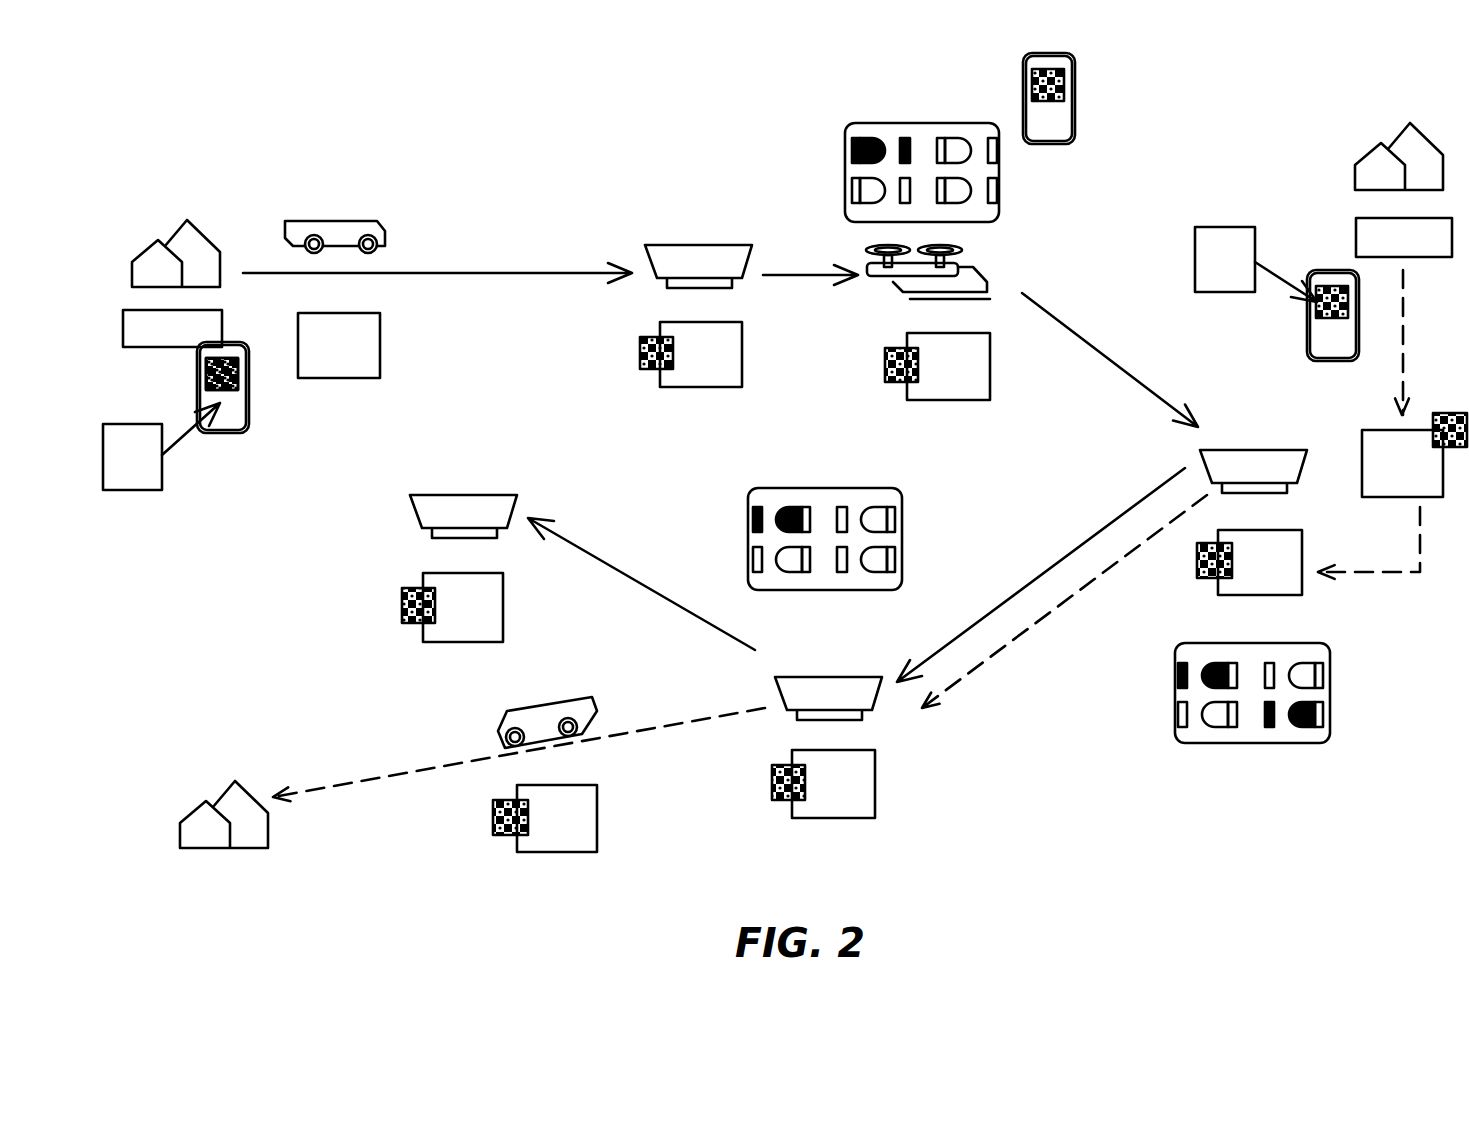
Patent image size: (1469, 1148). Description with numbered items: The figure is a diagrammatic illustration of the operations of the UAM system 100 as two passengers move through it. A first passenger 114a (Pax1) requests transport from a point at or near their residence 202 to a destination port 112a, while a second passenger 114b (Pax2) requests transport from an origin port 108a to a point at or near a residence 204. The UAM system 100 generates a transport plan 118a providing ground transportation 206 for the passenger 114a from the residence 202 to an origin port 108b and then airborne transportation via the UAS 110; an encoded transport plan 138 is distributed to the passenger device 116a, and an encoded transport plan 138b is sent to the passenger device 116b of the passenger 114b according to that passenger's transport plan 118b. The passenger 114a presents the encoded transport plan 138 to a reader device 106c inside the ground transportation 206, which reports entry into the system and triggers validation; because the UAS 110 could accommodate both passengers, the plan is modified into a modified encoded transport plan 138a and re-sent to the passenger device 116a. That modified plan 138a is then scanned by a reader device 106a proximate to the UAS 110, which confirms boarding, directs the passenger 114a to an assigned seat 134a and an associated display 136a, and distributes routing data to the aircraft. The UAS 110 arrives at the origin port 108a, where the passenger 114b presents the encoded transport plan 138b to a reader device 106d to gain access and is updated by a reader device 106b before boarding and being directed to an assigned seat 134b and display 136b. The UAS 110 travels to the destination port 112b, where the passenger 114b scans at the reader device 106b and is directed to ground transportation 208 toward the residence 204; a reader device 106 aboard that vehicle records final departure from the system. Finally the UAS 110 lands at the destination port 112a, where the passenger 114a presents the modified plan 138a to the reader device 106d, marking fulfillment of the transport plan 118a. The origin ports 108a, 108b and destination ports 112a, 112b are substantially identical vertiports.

The UAM system 100 is at (229, 86).
The residence 202 is at (186, 221).
The residence 204 is at (230, 783).
The ground transportation 206 is at (336, 221).
The ground transportation 208 is at (495, 730).
The origin port 108a is at (1252, 450).
The origin port 108b is at (697, 243).
The destination port 112a is at (415, 513).
The destination port 112b is at (883, 693).
The uncrewed aircraft system 110 is at (1023, 262).
The reader device 106 is at (722, 367).
The reader device 106a is at (970, 382).
The reader device 106b is at (855, 801).
The reader device 106c is at (361, 355).
The reader device 106d is at (485, 622).
The passenger 114a is at (217, 342).
The passenger 114b is at (1448, 254).
The passenger device 116a is at (250, 388).
The passenger device 116b is at (1305, 315).
The transport plan 118a is at (154, 475).
The transport plan 118b is at (1246, 275).
The assigned seat 134a is at (868, 137).
The assigned seat 134b is at (1175, 675).
The display 136a is at (905, 137).
The display 136b is at (1218, 662).
The encoded transport plan 138 is at (205, 373).
The modified encoded transport plan 138a is at (1032, 87).
The encoded transport plan 138b is at (1330, 290).